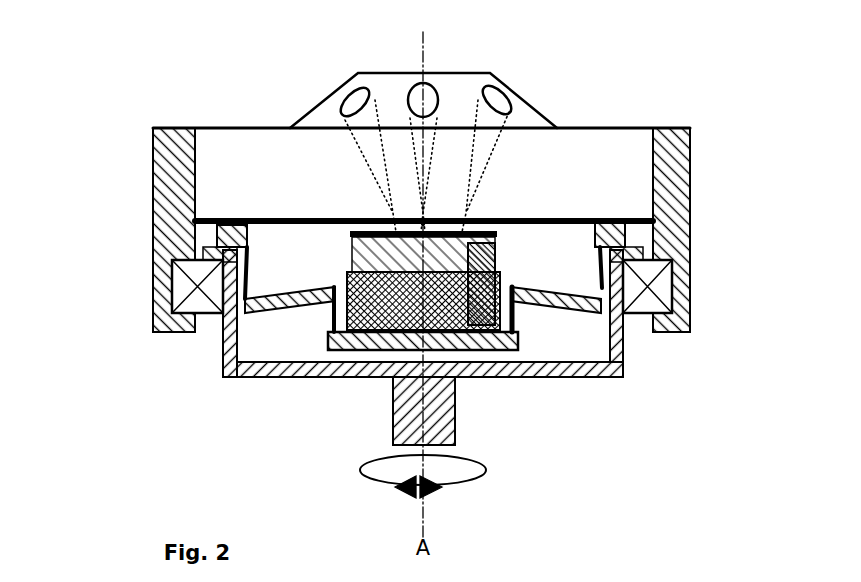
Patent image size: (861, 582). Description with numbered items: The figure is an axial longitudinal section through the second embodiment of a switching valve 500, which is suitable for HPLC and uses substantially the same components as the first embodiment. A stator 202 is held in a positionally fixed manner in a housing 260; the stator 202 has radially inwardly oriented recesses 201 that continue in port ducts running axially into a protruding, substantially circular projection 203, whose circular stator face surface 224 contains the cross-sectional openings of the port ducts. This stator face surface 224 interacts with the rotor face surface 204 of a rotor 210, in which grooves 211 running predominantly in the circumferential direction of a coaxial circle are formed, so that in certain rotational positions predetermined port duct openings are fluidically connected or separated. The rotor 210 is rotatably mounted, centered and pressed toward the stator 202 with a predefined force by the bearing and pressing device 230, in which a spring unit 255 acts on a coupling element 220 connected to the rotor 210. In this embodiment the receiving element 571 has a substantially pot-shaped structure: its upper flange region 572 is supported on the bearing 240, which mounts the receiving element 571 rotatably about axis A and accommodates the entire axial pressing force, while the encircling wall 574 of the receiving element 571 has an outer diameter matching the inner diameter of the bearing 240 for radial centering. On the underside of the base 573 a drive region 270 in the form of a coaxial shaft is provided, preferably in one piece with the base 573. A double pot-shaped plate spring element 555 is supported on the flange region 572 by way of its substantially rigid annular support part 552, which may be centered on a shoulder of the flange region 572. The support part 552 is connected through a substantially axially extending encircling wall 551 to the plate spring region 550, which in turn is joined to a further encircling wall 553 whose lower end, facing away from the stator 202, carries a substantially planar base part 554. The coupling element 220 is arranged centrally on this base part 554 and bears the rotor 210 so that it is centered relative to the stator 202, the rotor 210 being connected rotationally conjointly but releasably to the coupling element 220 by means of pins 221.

The switching valve 500 is at (540, 81).
The recesses 201 is at (487, 76).
The stator 202 is at (627, 177).
The stator face surface 224 is at (378, 224).
The grooves 211 is at (405, 235).
The rotor 210 is at (320, 222).
The housing 260 is at (172, 250).
The encircling wall 551 is at (215, 233).
The flange region 572 is at (628, 243).
The bearing 240 is at (195, 300).
The plate spring element 555 is at (627, 333).
The bearing and pressing device 230 is at (645, 365).
The base 573 is at (278, 378).
The encircling wall 574 is at (223, 352).
The receiving element 571 is at (597, 380).
The support part 552 is at (250, 235).
The coupling element 220 is at (345, 283).
The plate spring region 550 is at (300, 308).
The base part 554 is at (367, 352).
The spring unit 255 is at (529, 347).
The further encircling wall 553 is at (518, 323).
The projection 203 is at (493, 230).
The pins 221 is at (497, 265).
The rotor face surface 204 is at (480, 345).
The drive region 270 is at (393, 408).